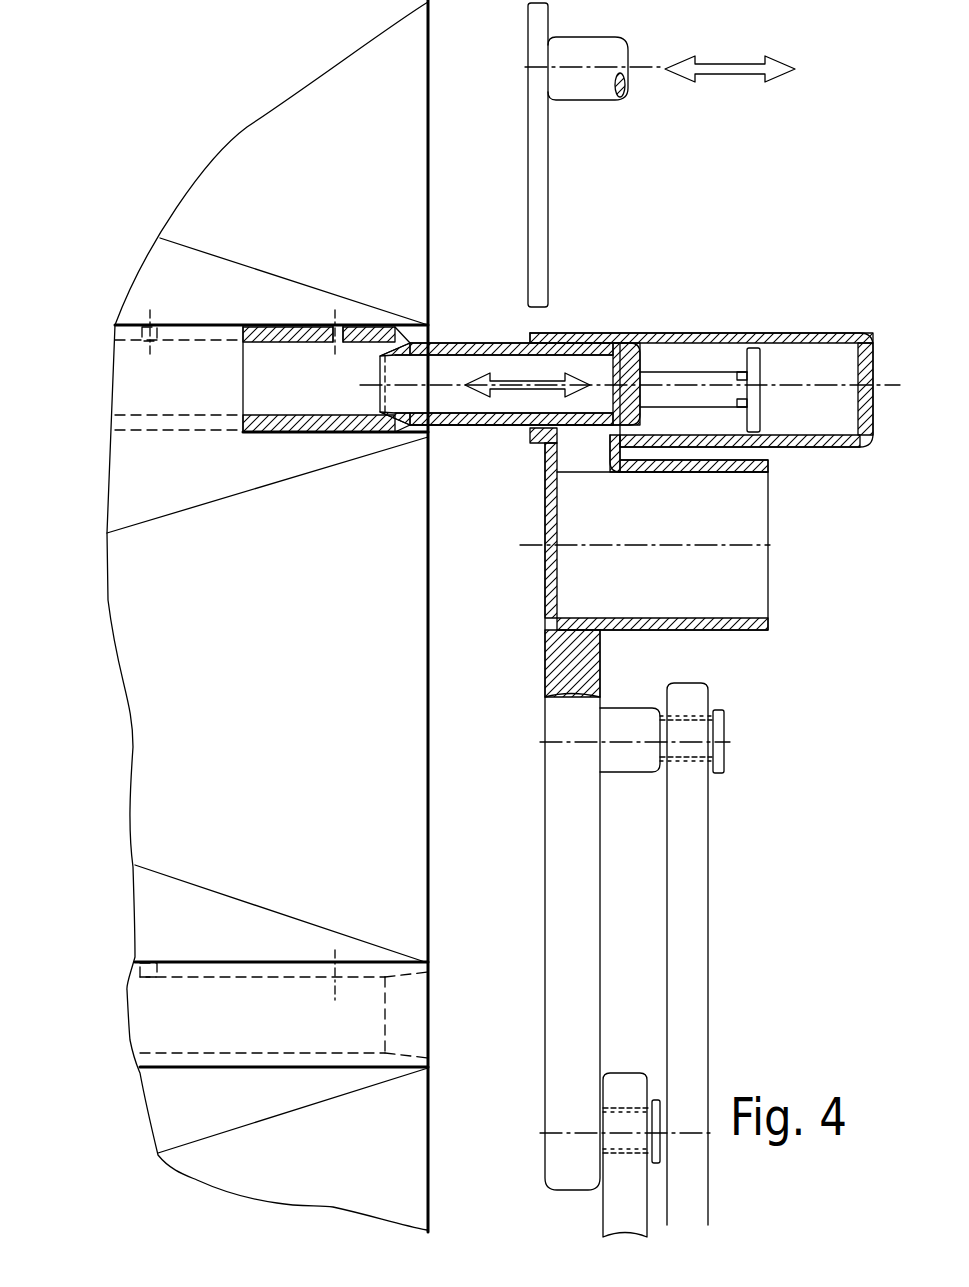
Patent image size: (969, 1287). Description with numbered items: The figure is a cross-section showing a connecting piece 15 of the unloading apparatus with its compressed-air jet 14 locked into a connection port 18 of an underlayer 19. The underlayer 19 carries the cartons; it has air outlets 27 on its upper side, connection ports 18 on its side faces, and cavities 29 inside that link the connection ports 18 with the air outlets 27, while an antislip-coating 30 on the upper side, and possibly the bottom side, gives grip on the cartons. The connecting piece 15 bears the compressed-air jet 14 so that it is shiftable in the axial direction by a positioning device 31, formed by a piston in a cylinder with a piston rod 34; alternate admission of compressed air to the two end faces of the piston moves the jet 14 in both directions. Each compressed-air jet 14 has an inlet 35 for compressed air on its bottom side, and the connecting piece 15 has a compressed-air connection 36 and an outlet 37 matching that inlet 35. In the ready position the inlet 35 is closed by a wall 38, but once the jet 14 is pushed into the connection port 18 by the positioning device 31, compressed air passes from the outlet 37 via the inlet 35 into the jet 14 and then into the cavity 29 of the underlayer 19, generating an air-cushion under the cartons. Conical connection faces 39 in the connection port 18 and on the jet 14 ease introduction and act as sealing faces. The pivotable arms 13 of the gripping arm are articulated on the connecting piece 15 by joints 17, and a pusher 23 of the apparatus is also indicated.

The pivotable arm 13 is at (687, 890).
The compressed-air jet 14 is at (467, 340).
The connecting piece 15 is at (577, 655).
The joint 17 is at (690, 750).
The connection port 18 is at (393, 430).
The underlayer 19 is at (257, 437).
The pusher 23 is at (540, 173).
The air outlet 27 is at (333, 323).
The cavity 29 is at (287, 382).
The antislip-coating 30 is at (182, 325).
The positioning device 31 is at (773, 325).
The piston rod 34 is at (708, 392).
The inlet 35 is at (593, 415).
The compressed-air connection 36 is at (705, 578).
The outlet 37 is at (587, 440).
The wall 38 is at (493, 420).
The conical connection face 39 is at (398, 326).